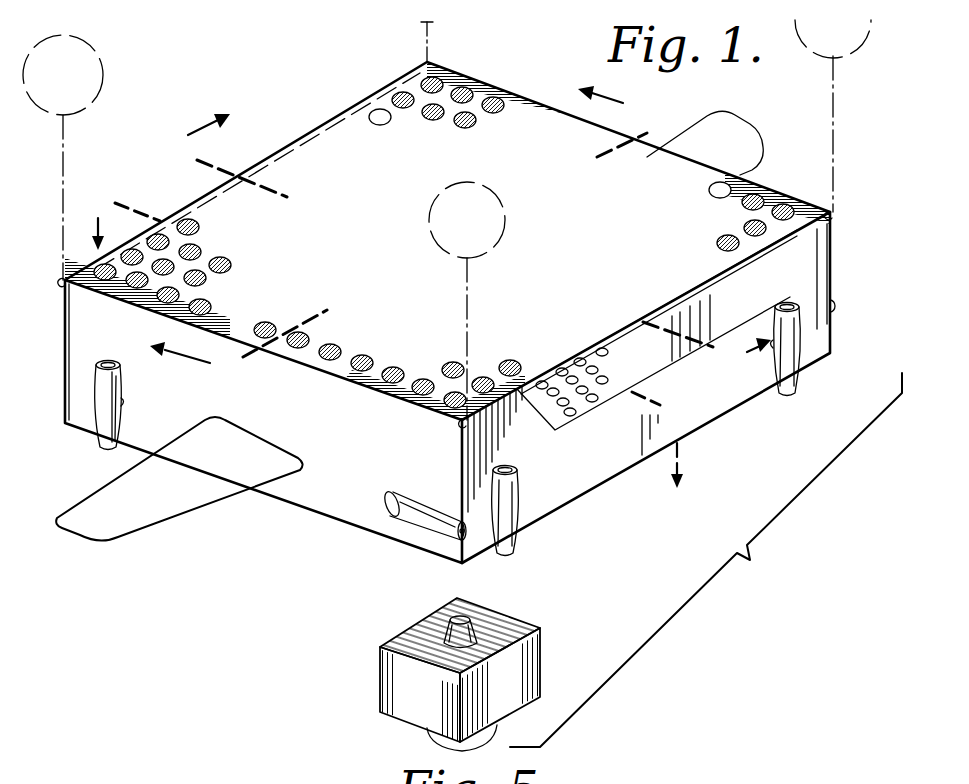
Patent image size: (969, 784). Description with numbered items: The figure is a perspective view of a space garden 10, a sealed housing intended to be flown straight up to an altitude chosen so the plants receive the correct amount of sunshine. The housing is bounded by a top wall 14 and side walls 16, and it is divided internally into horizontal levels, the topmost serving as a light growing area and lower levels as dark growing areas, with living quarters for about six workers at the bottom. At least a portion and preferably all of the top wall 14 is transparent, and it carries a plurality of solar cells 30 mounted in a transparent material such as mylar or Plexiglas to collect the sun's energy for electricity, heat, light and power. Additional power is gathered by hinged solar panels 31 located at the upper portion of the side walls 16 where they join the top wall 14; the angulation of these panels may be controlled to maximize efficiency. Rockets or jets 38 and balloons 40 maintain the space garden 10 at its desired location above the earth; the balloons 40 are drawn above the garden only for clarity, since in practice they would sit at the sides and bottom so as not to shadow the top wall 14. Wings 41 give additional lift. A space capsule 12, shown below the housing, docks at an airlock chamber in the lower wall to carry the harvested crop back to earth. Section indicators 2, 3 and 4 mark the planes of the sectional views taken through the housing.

The space garden 10 is at (846, 258).
The space capsule 12 is at (520, 668).
The top wall 14 is at (648, 148).
The side walls 16 is at (262, 162).
The solar cells 30 is at (462, 124).
The hinged solar panels 31 is at (664, 323).
The rockets or jets 38 is at (110, 428).
The balloons 40 is at (80, 75).
The wings 41 is at (727, 153).
The section line 2- 2 is at (384, 337).
The section line 3- 3 is at (468, 246).
The section line 4- 4 is at (404, 238).